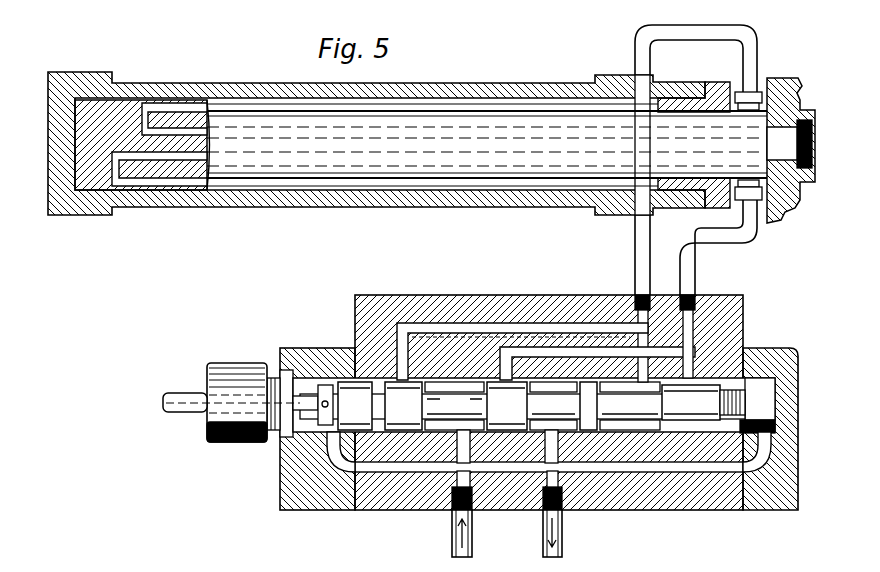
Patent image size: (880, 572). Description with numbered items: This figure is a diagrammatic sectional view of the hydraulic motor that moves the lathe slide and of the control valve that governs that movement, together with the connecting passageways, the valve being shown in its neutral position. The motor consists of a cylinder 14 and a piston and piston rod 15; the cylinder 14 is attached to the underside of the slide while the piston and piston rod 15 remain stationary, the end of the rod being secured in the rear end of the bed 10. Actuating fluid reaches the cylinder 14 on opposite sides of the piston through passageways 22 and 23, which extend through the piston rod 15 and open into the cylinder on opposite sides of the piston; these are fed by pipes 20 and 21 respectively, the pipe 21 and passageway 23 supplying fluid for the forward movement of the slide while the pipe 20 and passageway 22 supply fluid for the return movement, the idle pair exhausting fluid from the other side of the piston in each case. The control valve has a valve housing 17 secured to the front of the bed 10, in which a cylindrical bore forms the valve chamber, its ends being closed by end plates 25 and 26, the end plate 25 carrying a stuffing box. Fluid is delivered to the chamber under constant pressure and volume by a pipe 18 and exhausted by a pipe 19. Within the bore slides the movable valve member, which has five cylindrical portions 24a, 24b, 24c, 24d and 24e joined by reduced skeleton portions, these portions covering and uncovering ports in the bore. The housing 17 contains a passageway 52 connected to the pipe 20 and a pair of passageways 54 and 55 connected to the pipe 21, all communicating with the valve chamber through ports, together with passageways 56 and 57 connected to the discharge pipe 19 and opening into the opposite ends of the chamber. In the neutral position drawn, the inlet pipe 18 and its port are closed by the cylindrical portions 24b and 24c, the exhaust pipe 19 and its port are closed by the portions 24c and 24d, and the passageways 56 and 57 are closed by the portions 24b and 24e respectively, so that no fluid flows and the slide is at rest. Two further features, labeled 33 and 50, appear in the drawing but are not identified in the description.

The bed 10 is at (780, 82).
The cylinder 14 is at (455, 90).
The piston and piston rod 15 is at (112, 110).
The valve housing 17 is at (542, 300).
The pipe 18 is at (452, 545).
The pipe 19 is at (565, 540).
The pipe 20 is at (750, 59).
The pipe 21 is at (757, 232).
The passageway 22 is at (185, 128).
The passageway 23 is at (172, 160).
The cylindrical portion 24a is at (338, 378).
The cylindrical portion 24b is at (454, 406).
The cylindrical portion 24c is at (553, 406).
The cylindrical portion 24d is at (630, 406).
The cylindrical portion 24e is at (703, 402).
The end plate 25 is at (290, 485).
The end plate 26 is at (788, 350).
The port 33 is at (644, 356).
The port 50 is at (556, 451).
The passageway 52 is at (466, 330).
The passageway 54 is at (590, 355).
The passageway 55 is at (745, 353).
The passageway 56 is at (390, 473).
The passageway 57 is at (760, 478).